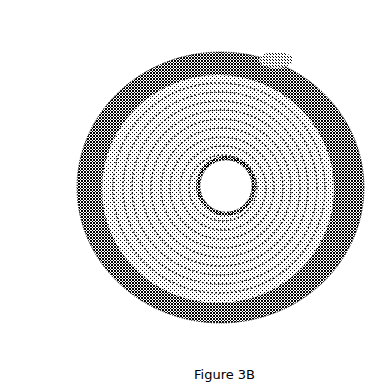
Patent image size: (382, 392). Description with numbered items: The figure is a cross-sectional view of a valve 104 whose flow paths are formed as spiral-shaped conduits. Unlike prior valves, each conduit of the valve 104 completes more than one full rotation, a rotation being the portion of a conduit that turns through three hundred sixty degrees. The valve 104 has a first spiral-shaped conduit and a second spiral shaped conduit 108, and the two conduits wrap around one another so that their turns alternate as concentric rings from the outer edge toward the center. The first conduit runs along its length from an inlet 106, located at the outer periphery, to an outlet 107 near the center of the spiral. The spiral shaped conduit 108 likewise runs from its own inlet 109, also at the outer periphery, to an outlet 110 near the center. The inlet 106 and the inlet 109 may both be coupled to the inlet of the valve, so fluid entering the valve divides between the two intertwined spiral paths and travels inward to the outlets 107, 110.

The valve 104 is at (202, 185).
The inlet 106 is at (172, 312).
The outlet 107 is at (231, 160).
The spiral shaped conduit 108 is at (271, 60).
The inlet 109 is at (293, 278).
The outlet 110 is at (213, 209).